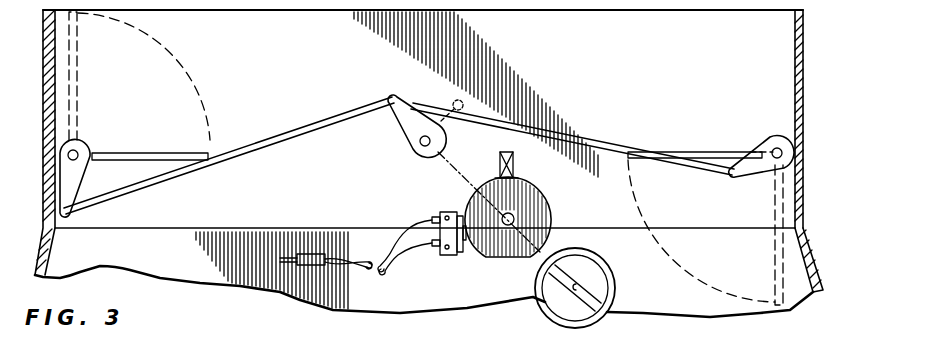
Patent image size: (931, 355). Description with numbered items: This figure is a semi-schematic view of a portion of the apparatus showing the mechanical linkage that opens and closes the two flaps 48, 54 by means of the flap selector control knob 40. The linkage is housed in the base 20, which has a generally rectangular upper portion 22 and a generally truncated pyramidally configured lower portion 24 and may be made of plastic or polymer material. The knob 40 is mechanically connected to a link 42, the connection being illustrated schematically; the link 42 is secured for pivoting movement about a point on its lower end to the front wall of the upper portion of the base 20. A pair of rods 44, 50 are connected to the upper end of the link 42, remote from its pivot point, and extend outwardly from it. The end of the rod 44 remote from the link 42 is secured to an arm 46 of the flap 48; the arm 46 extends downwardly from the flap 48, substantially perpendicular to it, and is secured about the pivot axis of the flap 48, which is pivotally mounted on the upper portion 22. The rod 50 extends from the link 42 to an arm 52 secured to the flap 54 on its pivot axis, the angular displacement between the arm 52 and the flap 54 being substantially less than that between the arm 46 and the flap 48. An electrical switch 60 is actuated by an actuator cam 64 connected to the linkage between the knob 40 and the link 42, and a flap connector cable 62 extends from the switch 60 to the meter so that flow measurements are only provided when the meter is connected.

The base 20 is at (813, 223).
The upper portion 22 is at (806, 30).
The lower portion 24 is at (814, 261).
The flap selector control knob 40 is at (606, 283).
The link 42 is at (410, 139).
The rod 44 is at (300, 128).
The arm 46 is at (66, 181).
The flap 48 is at (147, 153).
The rod 50 is at (609, 148).
The arm 52 is at (780, 134).
The flap 54 is at (723, 122).
The electrical switch 60 is at (453, 257).
The flap connector cable 62 is at (320, 251).
The actuator cam 64 is at (538, 206).